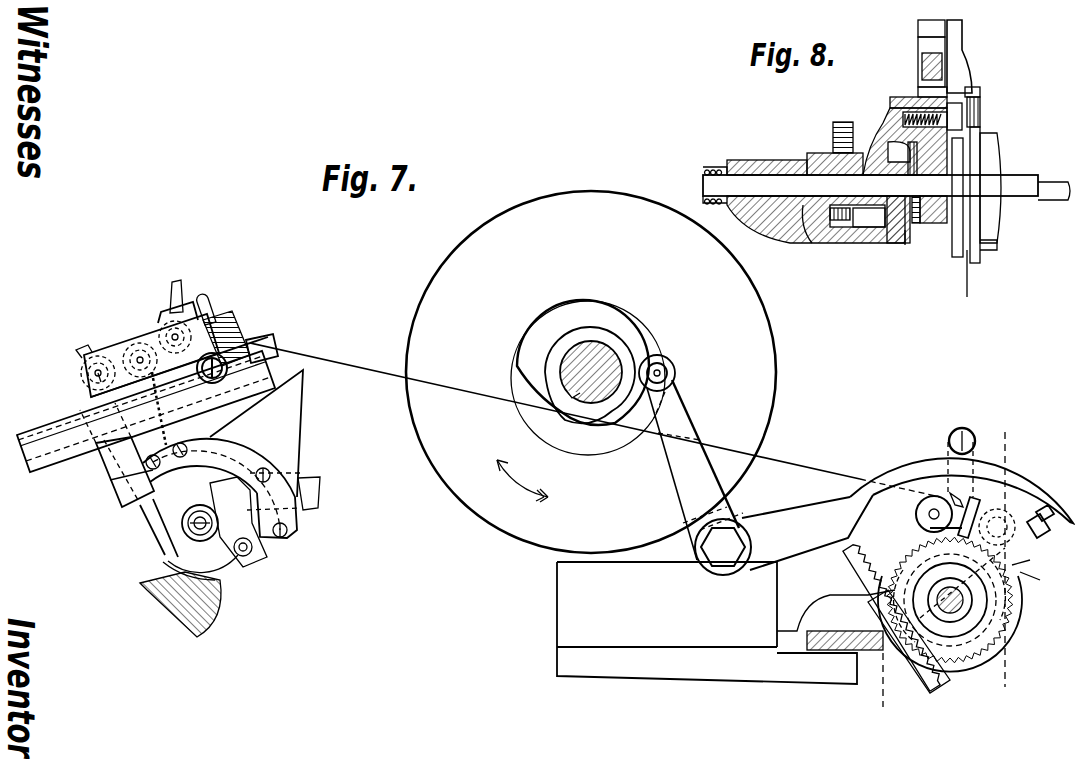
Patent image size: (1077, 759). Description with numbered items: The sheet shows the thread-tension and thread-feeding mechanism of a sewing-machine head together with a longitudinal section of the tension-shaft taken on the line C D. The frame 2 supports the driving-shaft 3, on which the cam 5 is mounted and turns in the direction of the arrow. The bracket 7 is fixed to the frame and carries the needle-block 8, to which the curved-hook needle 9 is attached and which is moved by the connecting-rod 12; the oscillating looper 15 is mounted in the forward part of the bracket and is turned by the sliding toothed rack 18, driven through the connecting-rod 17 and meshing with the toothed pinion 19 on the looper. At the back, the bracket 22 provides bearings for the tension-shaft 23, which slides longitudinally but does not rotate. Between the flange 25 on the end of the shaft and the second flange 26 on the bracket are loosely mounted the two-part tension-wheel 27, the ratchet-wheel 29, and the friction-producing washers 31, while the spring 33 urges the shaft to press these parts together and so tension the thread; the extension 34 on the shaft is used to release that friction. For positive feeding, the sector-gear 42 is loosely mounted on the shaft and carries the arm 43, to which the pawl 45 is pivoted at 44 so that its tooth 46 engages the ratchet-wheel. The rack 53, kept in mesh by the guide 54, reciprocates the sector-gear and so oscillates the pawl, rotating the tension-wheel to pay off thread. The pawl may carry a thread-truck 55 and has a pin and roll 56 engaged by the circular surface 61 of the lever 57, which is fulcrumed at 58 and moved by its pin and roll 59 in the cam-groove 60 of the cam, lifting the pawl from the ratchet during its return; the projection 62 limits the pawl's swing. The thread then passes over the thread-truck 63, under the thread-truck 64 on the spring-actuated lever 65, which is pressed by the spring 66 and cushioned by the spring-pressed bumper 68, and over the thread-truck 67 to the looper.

In FIG. 7, the frame 2 is at (707, 623).
In FIG. 7, the driving-shaft 3 is at (605, 392).
In FIG. 7, the cam 5 is at (616, 243).
In FIG. 7, the bracket 7 is at (223, 471).
In FIG. 7, the needle-block 8 is at (212, 520).
In FIG. 7, the curved-hook needle 9 is at (225, 563).
In FIG. 7, the connecting-rod 12 is at (318, 473).
In FIG. 7, the oscillating looper 15 is at (162, 533).
In FIG. 7, the connecting-rod 17 is at (262, 350).
In FIG. 7, the sliding toothed rack 18 is at (172, 390).
In FIG. 7, the toothed pinion 19 is at (72, 410).
In FIG. 7, the bracket 22 is at (836, 620).
In FIG. 8, the bracket 22 is at (764, 236).
In FIG. 7, the tension-shaft 23 is at (995, 605).
In FIG. 8, the tension-shaft 23 is at (870, 186).
In FIG. 8, the flange 25 is at (1000, 165).
In FIG. 7, the second flange 26 is at (965, 660).
In FIG. 8, the second flange 26 is at (886, 133).
In FIG. 7, the tension-wheel 27 is at (1021, 593).
In FIG. 8, the tension-wheel 27 is at (955, 262).
In FIG. 7, the ratchet-wheel 29 is at (1000, 645).
In FIG. 8, the ratchet-wheel 29 is at (918, 235).
In FIG. 8, the friction-producing washers 31 is at (905, 245).
In FIG. 8, the spring 33 is at (706, 176).
In FIG. 8, the extension 34 is at (1054, 190).
In FIG. 7, the sector-gear 42 is at (910, 575).
In FIG. 8, the sector-gear 42 is at (840, 222).
In FIG. 7, the arm 43 is at (1042, 579).
In FIG. 8, the arm 43 is at (895, 101).
In FIG. 7, the pawl pivot 44 is at (1044, 505).
In FIG. 8, the pawl pivot 44 is at (902, 118).
In FIG. 7, the pawl 45 is at (975, 497).
In FIG. 8, the pawl 45 is at (968, 86).
In FIG. 7, the tooth 46 is at (1000, 510).
In FIG. 7, the rack 53 is at (868, 585).
In FIG. 8, the rack 53 is at (834, 140).
In FIG. 7, the guide 54 is at (905, 660).
In FIG. 8, the guide 54 is at (810, 156).
In FIG. 7, the thread-truck 55 is at (915, 512).
In FIG. 8, the thread-truck 55 is at (980, 117).
In FIG. 7, the pin and roll 56 is at (950, 436).
In FIG. 8, the pin and roll 56 is at (931, 30).
In FIG. 7, the lever 57 is at (807, 532).
In FIG. 8, the lever 57 is at (922, 70).
In FIG. 7, the fulcrum 58 is at (723, 547).
In FIG. 7, the pin and roll 59 is at (674, 373).
In FIG. 7, the cam-groove 60 is at (588, 377).
In FIG. 7, the circular surface 61 is at (925, 462).
In FIG. 8, the circular surface 61 is at (928, 52).
In FIG. 7, the projection 62 is at (1033, 567).
In FIG. 7, the thread-truck 63 is at (168, 323).
In FIG. 7, the thread-truck 64 is at (128, 348).
In FIG. 7, the lever 65 is at (180, 286).
In FIG. 7, the spring 66 is at (167, 440).
In FIG. 7, the thread-truck 67 is at (80, 366).
In FIG. 7, the spring-pressed bumper 68 is at (214, 306).
In FIG. 7, the section line C is at (1003, 549).
In FIG. 7, the section line D is at (860, 721).